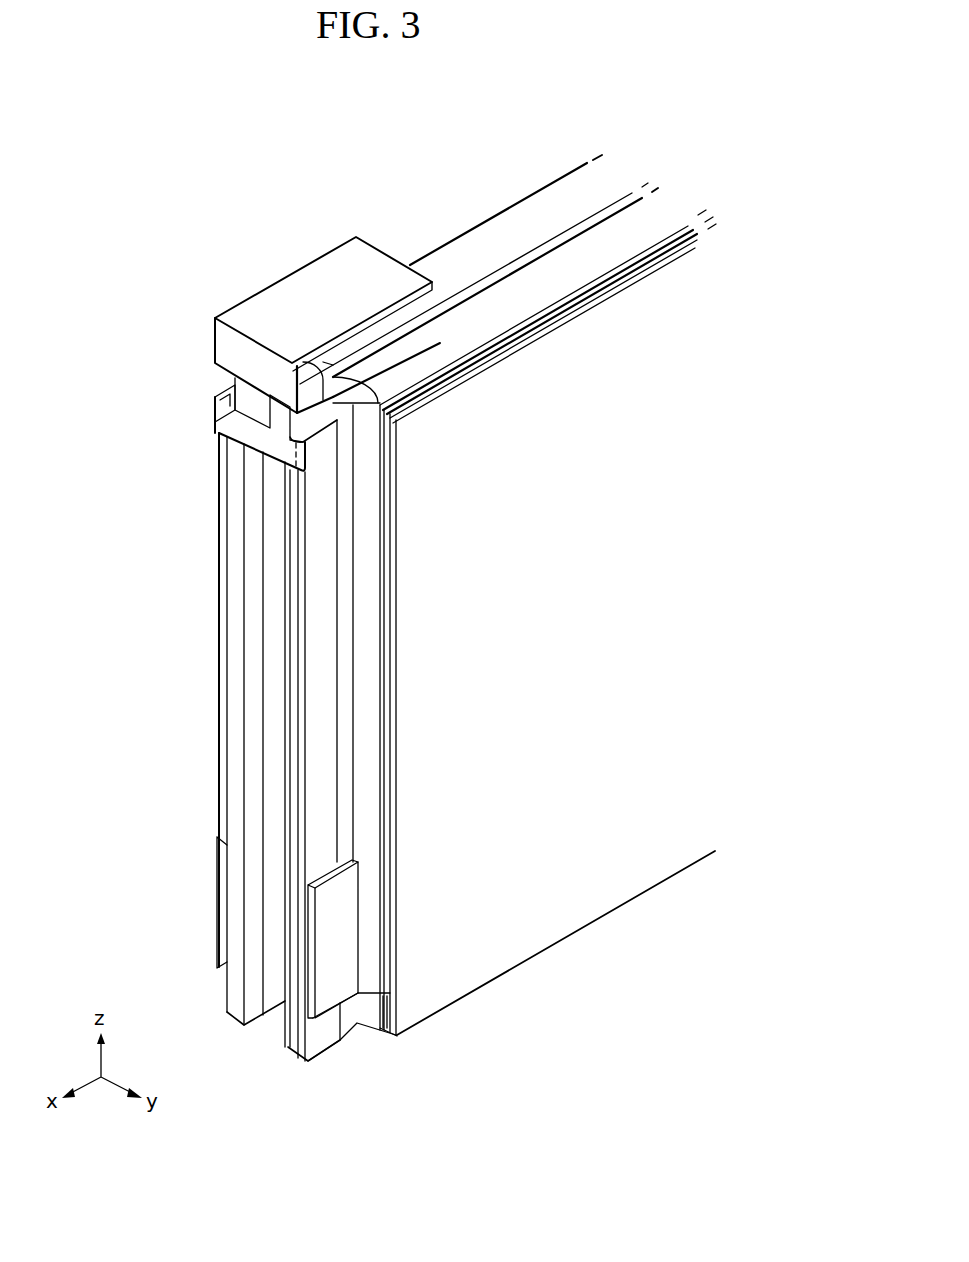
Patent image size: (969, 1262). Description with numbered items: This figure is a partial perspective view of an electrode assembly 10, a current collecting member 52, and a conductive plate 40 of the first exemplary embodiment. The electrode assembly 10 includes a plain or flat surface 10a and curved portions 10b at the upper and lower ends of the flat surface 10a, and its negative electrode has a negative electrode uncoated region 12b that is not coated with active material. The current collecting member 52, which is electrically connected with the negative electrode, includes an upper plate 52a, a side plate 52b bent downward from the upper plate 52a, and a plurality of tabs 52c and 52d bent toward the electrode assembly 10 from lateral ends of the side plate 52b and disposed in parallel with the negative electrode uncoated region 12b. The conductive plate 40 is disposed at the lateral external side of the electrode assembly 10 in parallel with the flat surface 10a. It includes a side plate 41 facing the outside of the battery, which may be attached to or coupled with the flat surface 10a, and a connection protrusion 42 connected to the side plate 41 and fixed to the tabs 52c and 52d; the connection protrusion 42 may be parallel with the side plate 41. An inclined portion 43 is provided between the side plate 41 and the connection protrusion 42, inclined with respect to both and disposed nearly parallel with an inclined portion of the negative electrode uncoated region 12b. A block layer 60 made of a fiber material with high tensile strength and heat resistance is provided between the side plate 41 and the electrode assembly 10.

The electrode assembly 10 is at (482, 157).
The flat surface 10a is at (508, 271).
The curved portions 10b is at (434, 243).
The negative electrode uncoated region 12b is at (295, 744).
The conductive plate 40 is at (545, 964).
The side plate 41 is at (572, 913).
The connection protrusion 42 is at (338, 980).
The inclined portion 43 is at (383, 960).
The current collecting member 52 is at (248, 292).
The upper plate 52a is at (333, 270).
The side plate 52b is at (248, 424).
The tab 52c is at (228, 998).
The tab 52d is at (324, 1040).
The block layer 60 is at (603, 268).